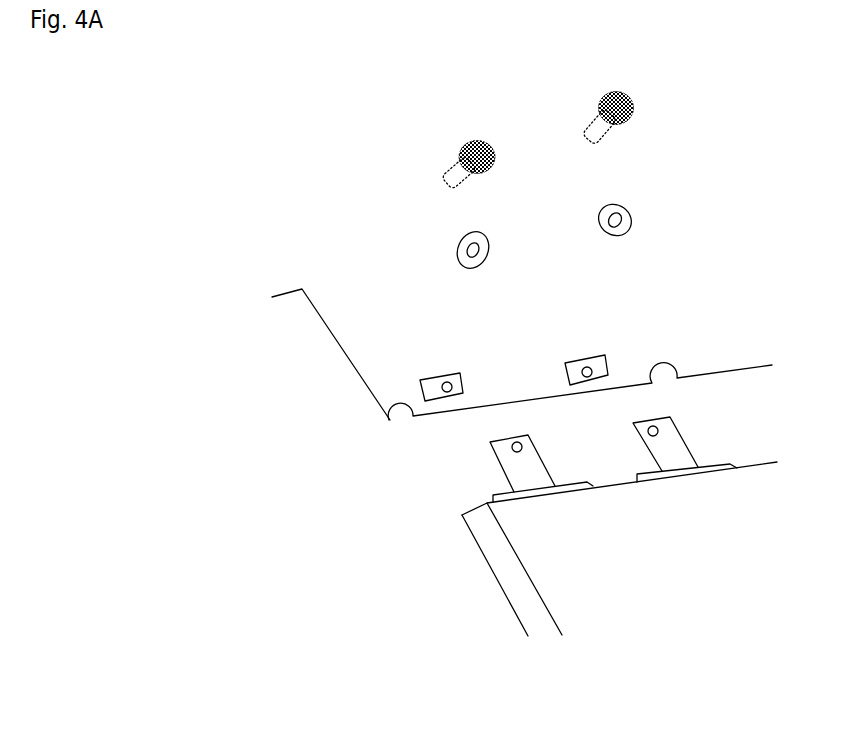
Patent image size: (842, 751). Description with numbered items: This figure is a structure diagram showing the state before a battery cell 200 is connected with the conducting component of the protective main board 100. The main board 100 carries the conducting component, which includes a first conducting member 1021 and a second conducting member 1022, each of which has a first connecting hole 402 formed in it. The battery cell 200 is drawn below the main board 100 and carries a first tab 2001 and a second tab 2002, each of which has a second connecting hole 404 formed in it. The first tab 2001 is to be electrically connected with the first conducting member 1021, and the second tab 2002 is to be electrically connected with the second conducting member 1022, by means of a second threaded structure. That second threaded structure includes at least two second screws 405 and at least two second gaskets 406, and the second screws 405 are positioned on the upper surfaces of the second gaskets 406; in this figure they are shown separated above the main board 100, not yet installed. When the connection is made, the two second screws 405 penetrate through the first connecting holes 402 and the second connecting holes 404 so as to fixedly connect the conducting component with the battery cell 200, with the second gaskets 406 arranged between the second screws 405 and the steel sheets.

The main board 100 is at (368, 327).
The first conducting member 1021 is at (425, 379).
The second conducting member 1022 is at (572, 371).
The first connecting hole 402 is at (449, 384).
The battery cell 200 is at (640, 608).
The first tab 2001 is at (505, 475).
The second tab 2002 is at (680, 445).
The second connecting hole 404 is at (522, 446).
The second screw 405 is at (478, 150).
The second gasket 406 is at (482, 243).